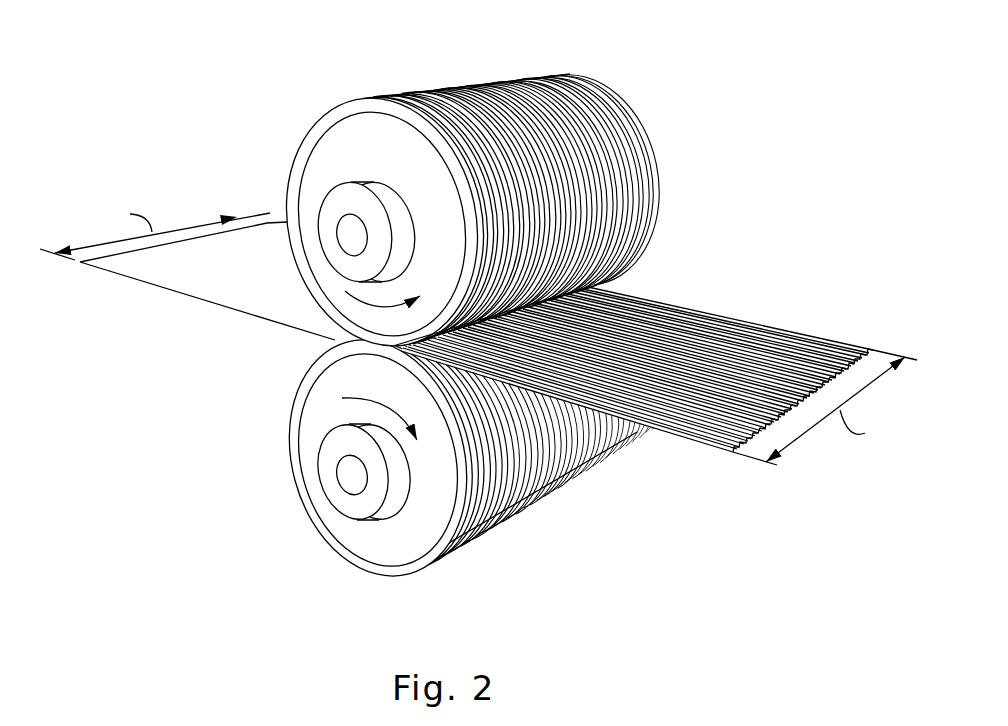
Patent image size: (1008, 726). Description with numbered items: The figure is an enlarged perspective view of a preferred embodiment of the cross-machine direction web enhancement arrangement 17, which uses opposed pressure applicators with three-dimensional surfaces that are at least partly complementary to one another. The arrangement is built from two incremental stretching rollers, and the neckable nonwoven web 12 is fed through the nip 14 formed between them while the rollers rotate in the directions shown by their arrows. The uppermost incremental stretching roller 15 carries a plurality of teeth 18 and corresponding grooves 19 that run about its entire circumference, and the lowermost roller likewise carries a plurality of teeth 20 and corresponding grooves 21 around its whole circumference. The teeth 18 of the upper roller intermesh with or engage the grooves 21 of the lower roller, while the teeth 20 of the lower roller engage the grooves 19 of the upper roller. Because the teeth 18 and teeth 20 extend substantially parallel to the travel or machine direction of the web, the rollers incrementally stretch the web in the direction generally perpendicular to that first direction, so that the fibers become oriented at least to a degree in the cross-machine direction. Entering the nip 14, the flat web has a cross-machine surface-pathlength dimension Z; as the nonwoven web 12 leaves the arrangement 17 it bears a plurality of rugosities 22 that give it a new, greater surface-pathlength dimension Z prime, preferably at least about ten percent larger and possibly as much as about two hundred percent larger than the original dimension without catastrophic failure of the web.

The neckable nonwoven web 12 is at (263, 283).
The nip 14 is at (326, 345).
The incremental stretching roller 15 is at (459, 201).
The cross-machine direction web enhancement arrangement 17 is at (575, 329).
The teeth 18 is at (357, 97).
The grooves 19 is at (413, 104).
The teeth 20 is at (420, 578).
The grooves 21 is at (478, 525).
The rugosities 22 is at (783, 413).